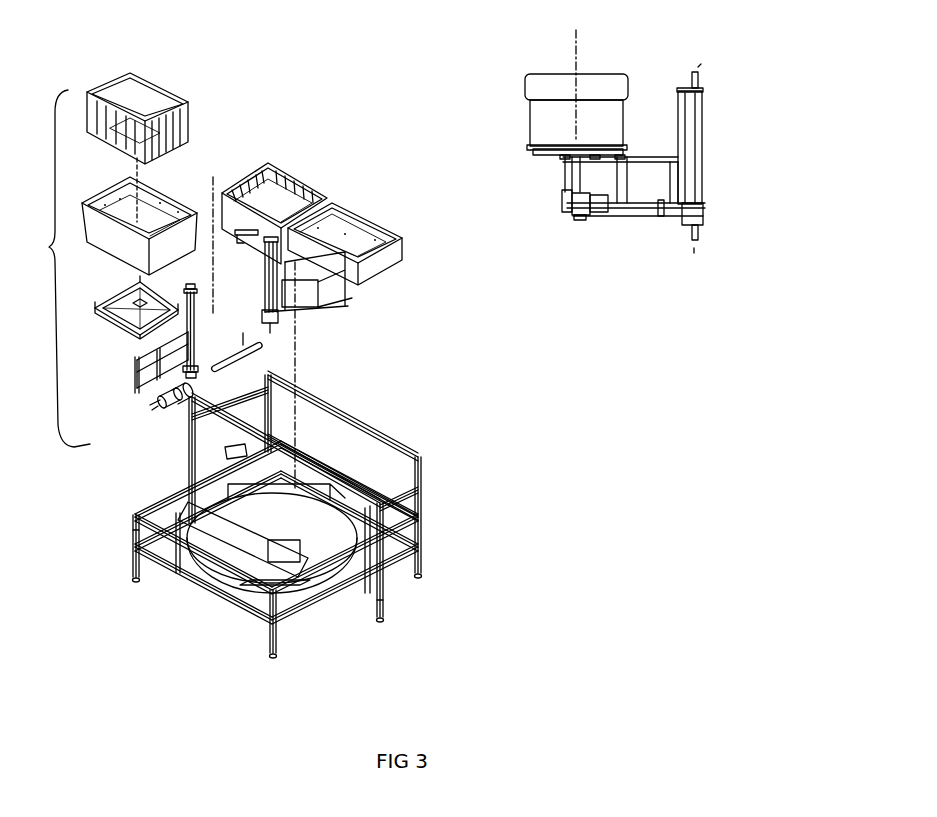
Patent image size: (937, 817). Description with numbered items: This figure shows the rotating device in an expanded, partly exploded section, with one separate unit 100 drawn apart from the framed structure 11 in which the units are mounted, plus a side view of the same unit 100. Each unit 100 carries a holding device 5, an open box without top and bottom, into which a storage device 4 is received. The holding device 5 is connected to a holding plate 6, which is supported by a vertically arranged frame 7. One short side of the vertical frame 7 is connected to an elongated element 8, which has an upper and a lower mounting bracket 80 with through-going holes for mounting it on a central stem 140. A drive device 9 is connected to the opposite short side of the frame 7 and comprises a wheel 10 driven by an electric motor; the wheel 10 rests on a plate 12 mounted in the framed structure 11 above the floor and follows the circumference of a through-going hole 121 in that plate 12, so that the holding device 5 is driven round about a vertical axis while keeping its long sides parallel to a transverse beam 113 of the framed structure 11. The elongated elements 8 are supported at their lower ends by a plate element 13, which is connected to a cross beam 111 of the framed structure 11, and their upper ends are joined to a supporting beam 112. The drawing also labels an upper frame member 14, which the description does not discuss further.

The unit 100 is at (812, 60).
The storage device 4 is at (112, 72).
The holding device 5 is at (96, 196).
The holding plate 6 is at (124, 319).
The vertically arranged frame 7 is at (133, 376).
The elongated element 8 is at (197, 343).
The mounting bracket 80 is at (192, 288).
The drive device 9 is at (154, 403).
The wheel 10 is at (170, 414).
The central stem 140 is at (266, 272).
The gantry frame 14 is at (317, 401).
The supporting beam 112 is at (238, 454).
The framed structure 11 is at (158, 580).
The transverse beam 113 is at (135, 533).
The cross beam 111 is at (367, 597).
The plate 12 is at (325, 590).
The through-going hole 121 is at (262, 572).
The plate element 13 is at (268, 556).